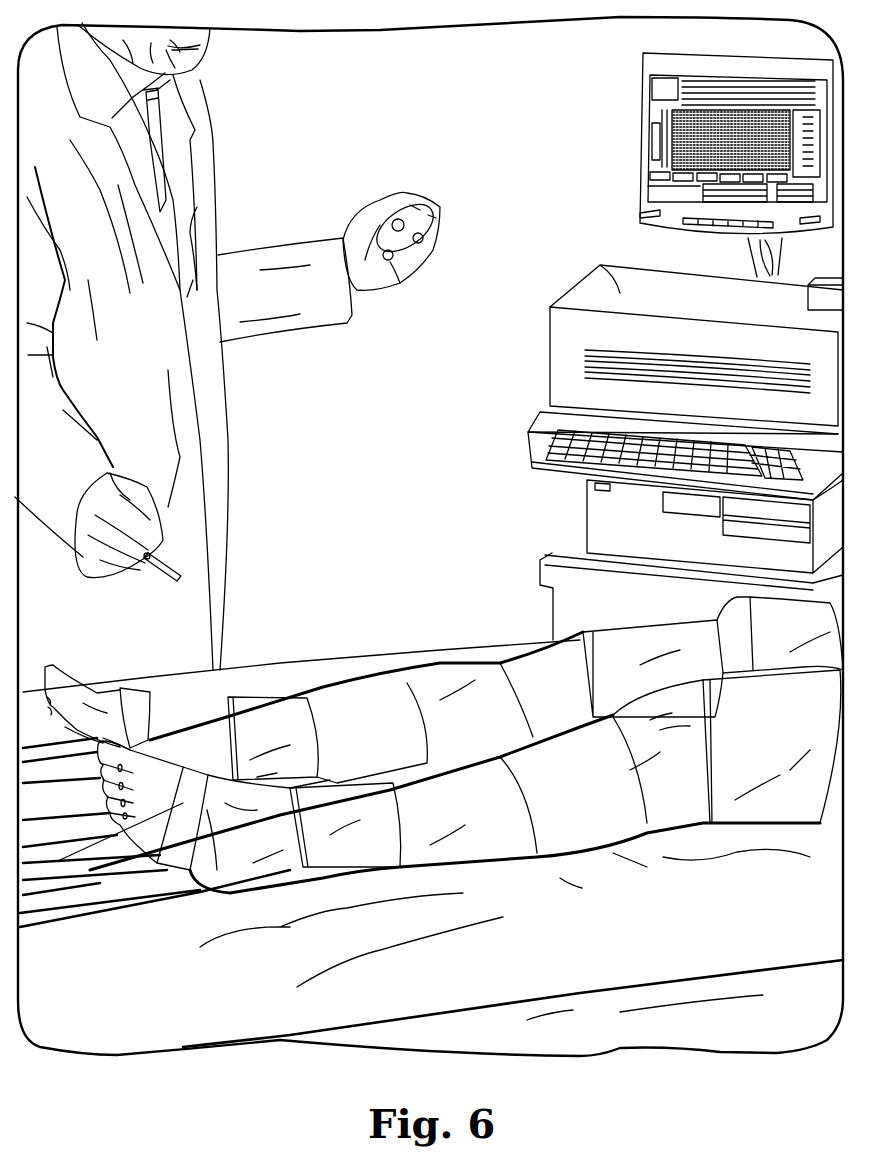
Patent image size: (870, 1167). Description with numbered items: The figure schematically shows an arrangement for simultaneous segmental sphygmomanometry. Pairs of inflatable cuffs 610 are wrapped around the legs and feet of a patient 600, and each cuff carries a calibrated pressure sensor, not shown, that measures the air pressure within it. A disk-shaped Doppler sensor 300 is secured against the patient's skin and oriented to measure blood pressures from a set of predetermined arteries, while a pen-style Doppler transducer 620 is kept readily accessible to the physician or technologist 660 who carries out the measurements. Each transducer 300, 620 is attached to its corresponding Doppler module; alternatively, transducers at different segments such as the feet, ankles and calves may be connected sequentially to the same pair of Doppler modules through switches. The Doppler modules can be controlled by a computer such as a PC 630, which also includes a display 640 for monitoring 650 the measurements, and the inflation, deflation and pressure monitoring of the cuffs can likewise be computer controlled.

The physician or technologist 660 is at (218, 200).
The monitoring 650 is at (672, 143).
The display 640 is at (628, 195).
The PC 630 is at (600, 265).
The pen-style Doppler transducer 620 is at (173, 560).
The inflatable cuffs 610 is at (347, 787).
The patient 600 is at (467, 857).
The disk-shaped Doppler sensor 300 is at (200, 870).